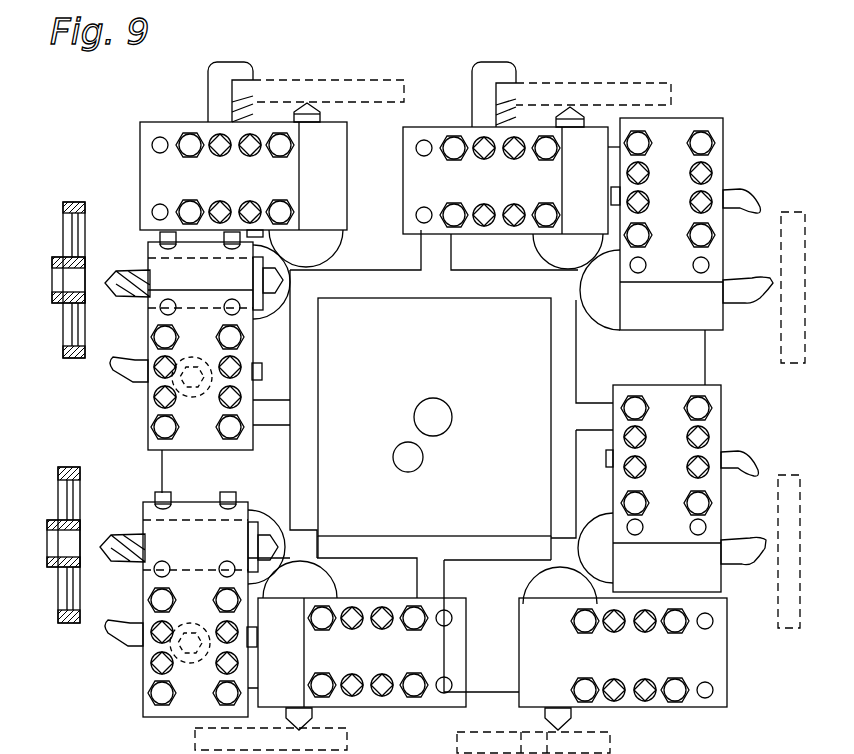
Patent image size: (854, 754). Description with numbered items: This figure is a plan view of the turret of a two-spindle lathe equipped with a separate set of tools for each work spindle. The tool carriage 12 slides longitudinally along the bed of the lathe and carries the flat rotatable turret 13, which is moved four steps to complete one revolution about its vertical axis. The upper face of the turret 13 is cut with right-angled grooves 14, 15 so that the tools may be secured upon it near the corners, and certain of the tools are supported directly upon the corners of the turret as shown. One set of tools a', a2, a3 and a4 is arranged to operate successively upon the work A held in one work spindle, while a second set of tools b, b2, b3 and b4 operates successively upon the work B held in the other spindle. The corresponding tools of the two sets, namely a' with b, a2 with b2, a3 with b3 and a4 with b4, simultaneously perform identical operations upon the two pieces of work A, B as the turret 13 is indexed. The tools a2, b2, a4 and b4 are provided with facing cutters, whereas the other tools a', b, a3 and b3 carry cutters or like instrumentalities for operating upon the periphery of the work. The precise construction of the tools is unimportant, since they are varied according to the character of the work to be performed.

The tool carriage 12 is at (434, 417).
The turret 13 is at (692, 368).
The right-angled groove 14 is at (437, 254).
The right-angled groove 15 is at (290, 277).
The work A is at (90, 584).
The work B is at (78, 201).
The tool a' is at (194, 604).
The tool b is at (148, 318).
The tool a2 is at (711, 670).
The tool b2 is at (432, 698).
The tool a3 is at (723, 266).
The tool b3 is at (712, 428).
The tool a4 is at (338, 143).
The tool b4 is at (427, 134).